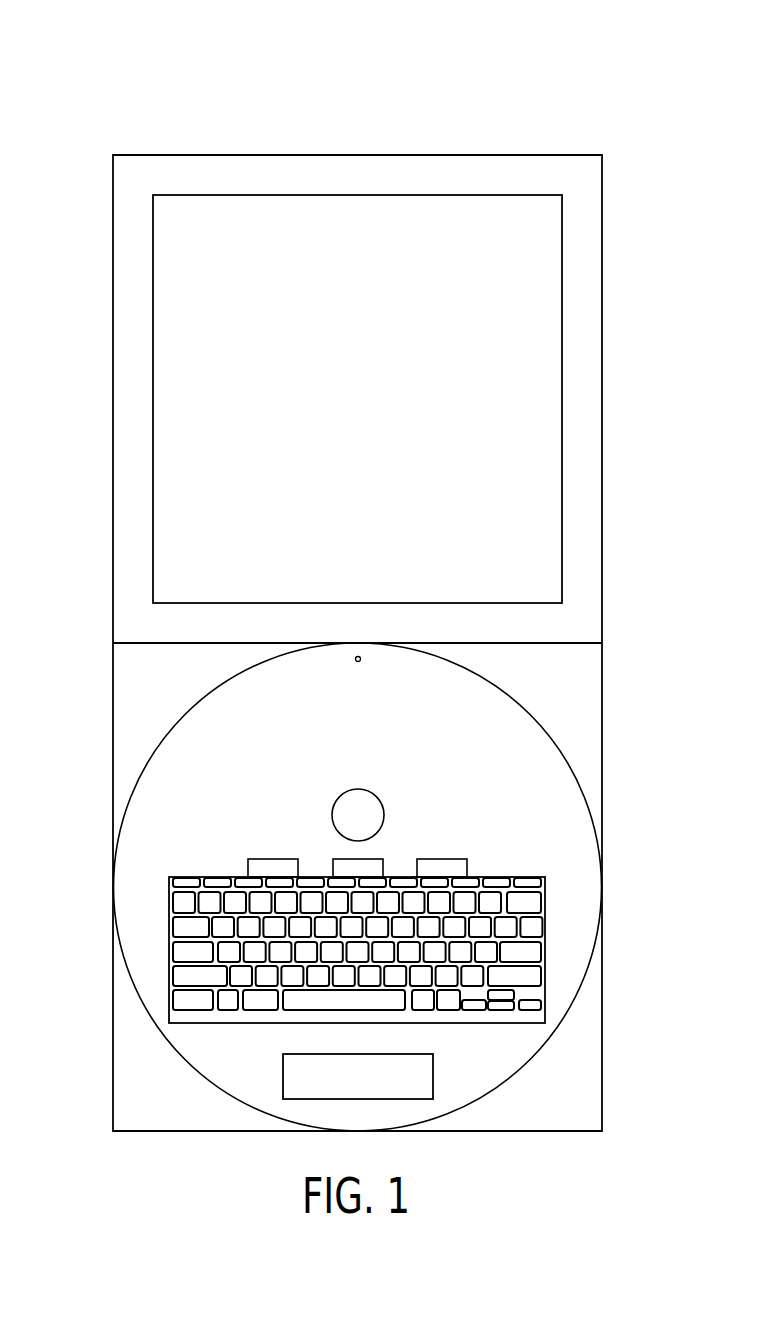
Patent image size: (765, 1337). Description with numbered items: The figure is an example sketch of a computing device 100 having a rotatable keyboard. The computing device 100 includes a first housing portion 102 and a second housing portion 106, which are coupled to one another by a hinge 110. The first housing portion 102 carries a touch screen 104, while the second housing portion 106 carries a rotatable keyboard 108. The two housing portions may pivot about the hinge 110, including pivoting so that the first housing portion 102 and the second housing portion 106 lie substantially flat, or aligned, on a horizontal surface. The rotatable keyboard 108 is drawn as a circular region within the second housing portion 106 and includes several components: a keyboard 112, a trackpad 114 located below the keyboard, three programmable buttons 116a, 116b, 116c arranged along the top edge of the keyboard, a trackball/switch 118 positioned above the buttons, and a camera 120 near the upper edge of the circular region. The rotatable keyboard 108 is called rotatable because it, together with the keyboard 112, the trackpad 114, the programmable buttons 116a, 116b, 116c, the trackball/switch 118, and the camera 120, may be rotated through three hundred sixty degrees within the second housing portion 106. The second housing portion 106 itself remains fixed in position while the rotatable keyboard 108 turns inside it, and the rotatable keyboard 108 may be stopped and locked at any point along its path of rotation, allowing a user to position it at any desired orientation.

The computing device 100 is at (165, 74).
The first housing portion 102 is at (113, 243).
The touch screen 104 is at (165, 352).
The second housing portion 106 is at (130, 745).
The rotatable keyboard 108 is at (135, 902).
The hinge 110 is at (113, 643).
The keyboard 112 is at (525, 920).
The trackpad 114 is at (420, 1074).
The programmable button 116a is at (262, 866).
The programmable button 116b is at (345, 866).
The programmable button 116c is at (458, 866).
The trackball/switch 118 is at (370, 813).
The camera 120 is at (361, 661).